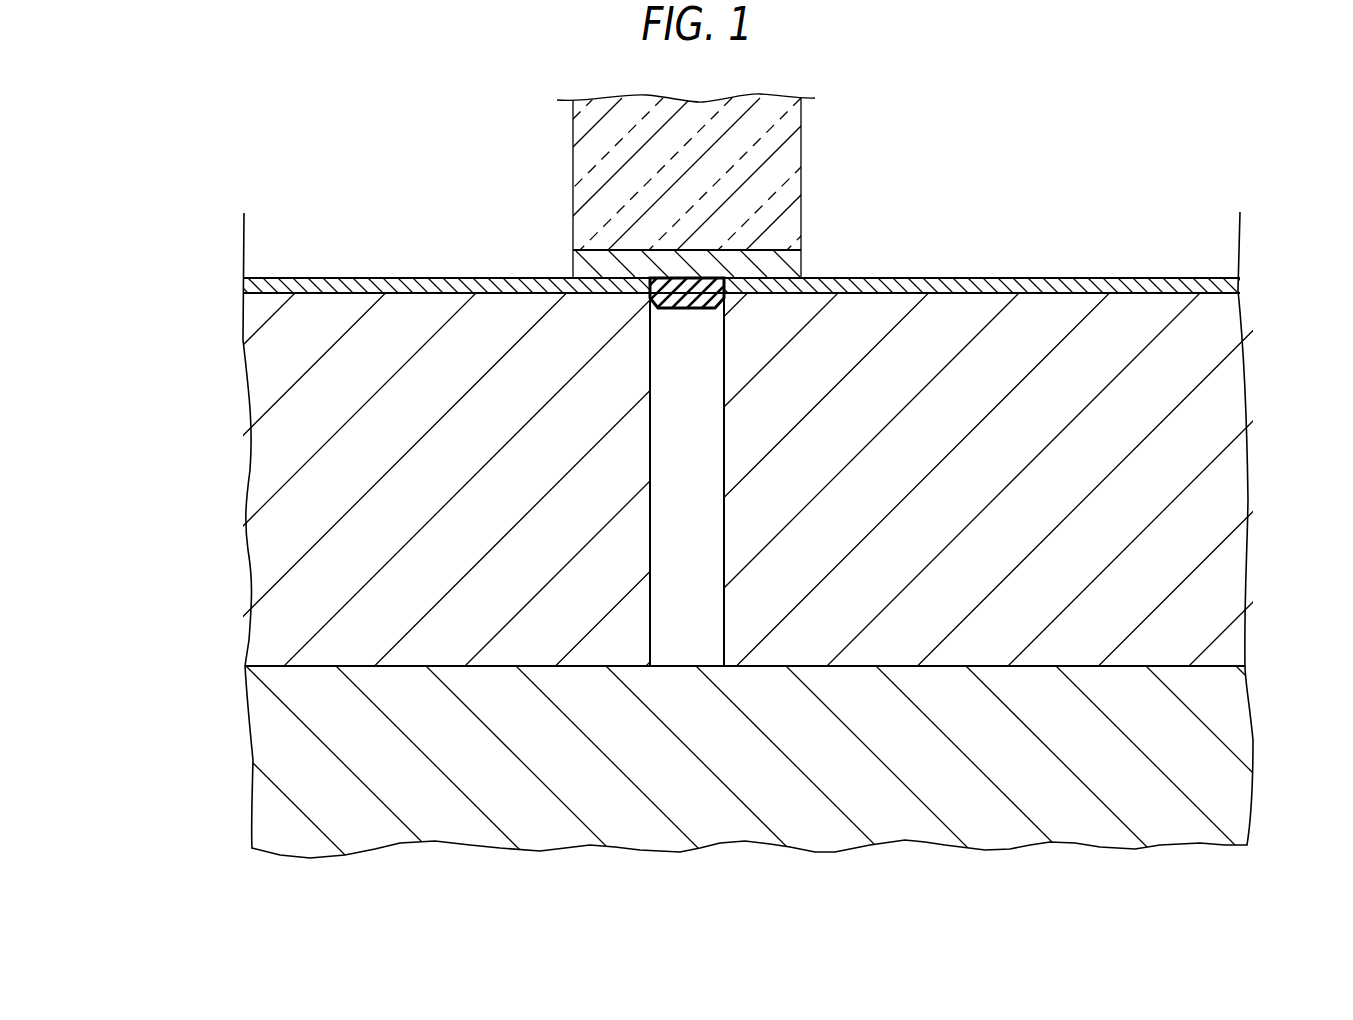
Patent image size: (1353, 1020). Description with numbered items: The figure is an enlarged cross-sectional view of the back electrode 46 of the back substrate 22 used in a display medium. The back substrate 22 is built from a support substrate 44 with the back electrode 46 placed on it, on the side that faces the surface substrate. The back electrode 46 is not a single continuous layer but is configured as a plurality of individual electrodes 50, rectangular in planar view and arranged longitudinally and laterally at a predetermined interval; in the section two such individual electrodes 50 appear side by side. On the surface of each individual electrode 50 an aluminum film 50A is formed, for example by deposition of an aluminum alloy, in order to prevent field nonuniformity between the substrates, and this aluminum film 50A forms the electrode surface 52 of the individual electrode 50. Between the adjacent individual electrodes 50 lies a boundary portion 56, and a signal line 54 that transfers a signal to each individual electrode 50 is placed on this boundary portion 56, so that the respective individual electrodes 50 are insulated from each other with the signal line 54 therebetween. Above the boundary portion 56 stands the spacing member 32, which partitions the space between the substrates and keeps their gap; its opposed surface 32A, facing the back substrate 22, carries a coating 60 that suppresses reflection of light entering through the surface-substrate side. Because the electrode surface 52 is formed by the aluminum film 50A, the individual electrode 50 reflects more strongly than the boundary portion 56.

The back substrate 22 is at (137, 535).
The spacing member 32 is at (780, 157).
The opposed surface 32A is at (790, 268).
The support substrate 44 is at (260, 733).
The back electrode 46 is at (240, 549).
The individual electrode 50 is at (260, 366).
The aluminum film 50A is at (343, 283).
The electrode surface 52 is at (428, 278).
The signal line 54 is at (697, 312).
The boundary portion 56 is at (675, 274).
The coating 60 is at (576, 268).